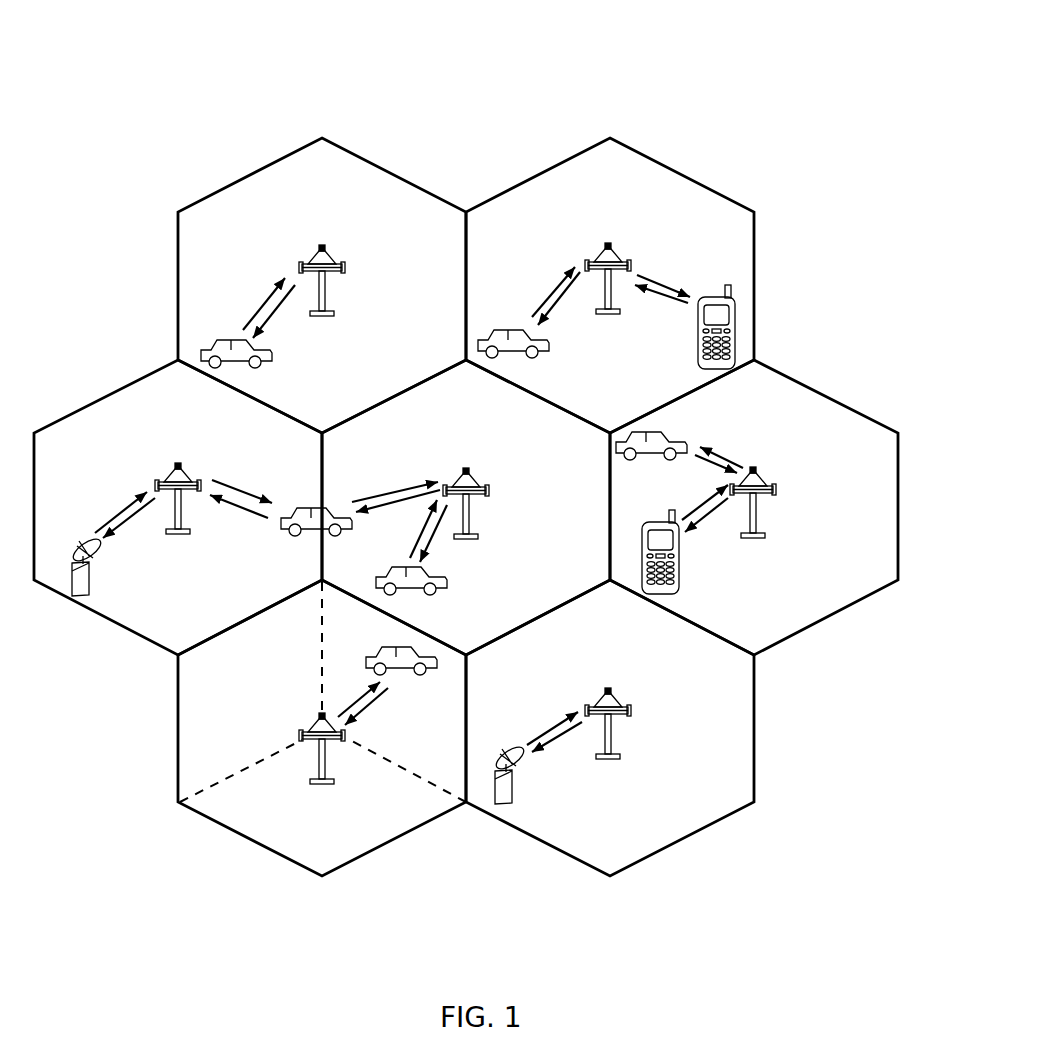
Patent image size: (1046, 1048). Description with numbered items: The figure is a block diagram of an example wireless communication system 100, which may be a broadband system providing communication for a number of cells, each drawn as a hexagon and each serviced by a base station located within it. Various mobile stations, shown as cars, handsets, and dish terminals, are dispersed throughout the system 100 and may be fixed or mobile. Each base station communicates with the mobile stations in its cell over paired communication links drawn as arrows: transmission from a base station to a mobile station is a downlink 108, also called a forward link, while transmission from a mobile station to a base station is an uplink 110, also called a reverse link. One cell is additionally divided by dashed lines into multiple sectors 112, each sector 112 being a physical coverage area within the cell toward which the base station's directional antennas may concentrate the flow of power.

The wireless communication system 100 is at (466, 447).
The downlink 108 is at (271, 318).
The uplink 110 is at (264, 304).
The sector 112 is at (374, 848).